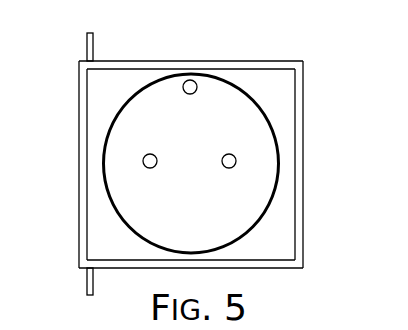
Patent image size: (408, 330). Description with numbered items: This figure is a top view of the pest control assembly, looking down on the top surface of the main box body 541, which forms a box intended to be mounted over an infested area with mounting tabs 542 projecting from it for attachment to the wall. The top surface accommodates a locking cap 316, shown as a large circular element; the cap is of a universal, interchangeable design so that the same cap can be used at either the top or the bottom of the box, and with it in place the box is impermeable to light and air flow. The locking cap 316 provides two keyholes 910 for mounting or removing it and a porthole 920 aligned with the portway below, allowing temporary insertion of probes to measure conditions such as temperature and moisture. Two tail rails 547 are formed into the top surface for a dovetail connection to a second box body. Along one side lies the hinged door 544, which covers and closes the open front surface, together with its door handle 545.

The locking cap 316 is at (205, 191).
The main box body 541 is at (246, 60).
The mounting tab 542 is at (86, 42).
The hinged door 544 is at (298, 199).
The door handle 545 is at (308, 262).
The tail rail 547 is at (128, 66).
The keyhole 910 is at (150, 161).
The porthole 920 is at (190, 80).